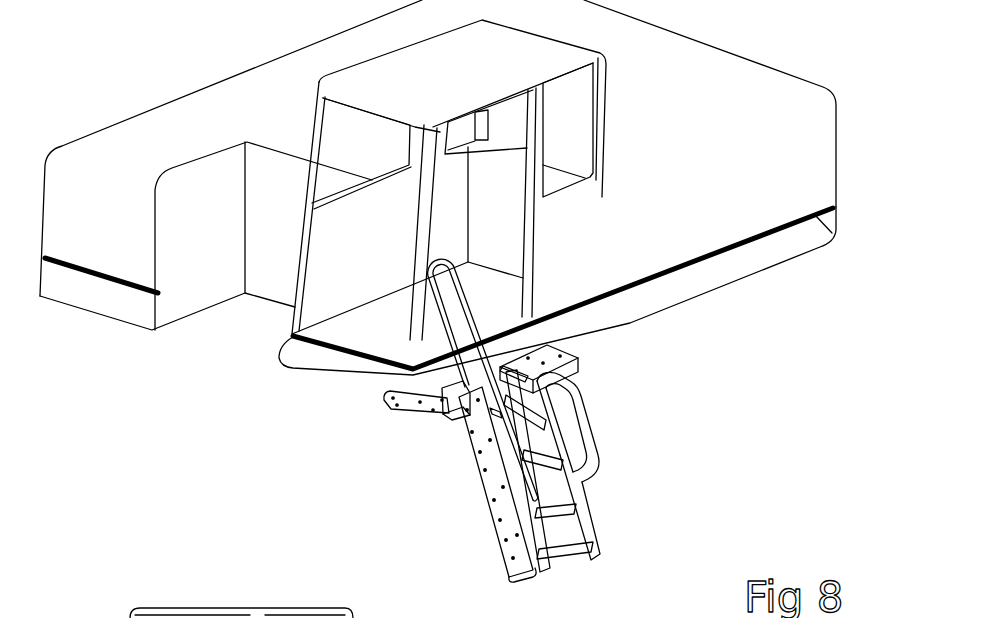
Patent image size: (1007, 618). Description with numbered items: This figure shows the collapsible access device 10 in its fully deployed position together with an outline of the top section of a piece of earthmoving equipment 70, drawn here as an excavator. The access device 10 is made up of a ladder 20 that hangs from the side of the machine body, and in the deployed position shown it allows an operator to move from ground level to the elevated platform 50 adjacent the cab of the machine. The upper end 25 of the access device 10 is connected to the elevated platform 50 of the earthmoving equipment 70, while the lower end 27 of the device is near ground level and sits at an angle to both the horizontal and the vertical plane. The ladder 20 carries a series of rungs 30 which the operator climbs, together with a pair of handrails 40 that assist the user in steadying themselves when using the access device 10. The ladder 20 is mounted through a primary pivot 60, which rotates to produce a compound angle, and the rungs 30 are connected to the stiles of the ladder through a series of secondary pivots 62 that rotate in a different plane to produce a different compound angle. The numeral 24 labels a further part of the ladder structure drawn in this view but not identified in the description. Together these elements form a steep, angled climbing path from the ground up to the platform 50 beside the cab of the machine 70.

The access device 10 is at (613, 476).
The ladder 20 is at (587, 513).
The ladder stile plate 24 is at (513, 507).
The upper end 25 is at (437, 410).
The lower end 27 is at (585, 563).
The rungs 30 is at (516, 523).
The handrails 40 is at (585, 430).
The elevated platform 50 is at (577, 367).
The primary pivot 60 is at (462, 400).
The secondary pivots 62 is at (540, 421).
The earthmoving equipment 70 is at (693, 282).